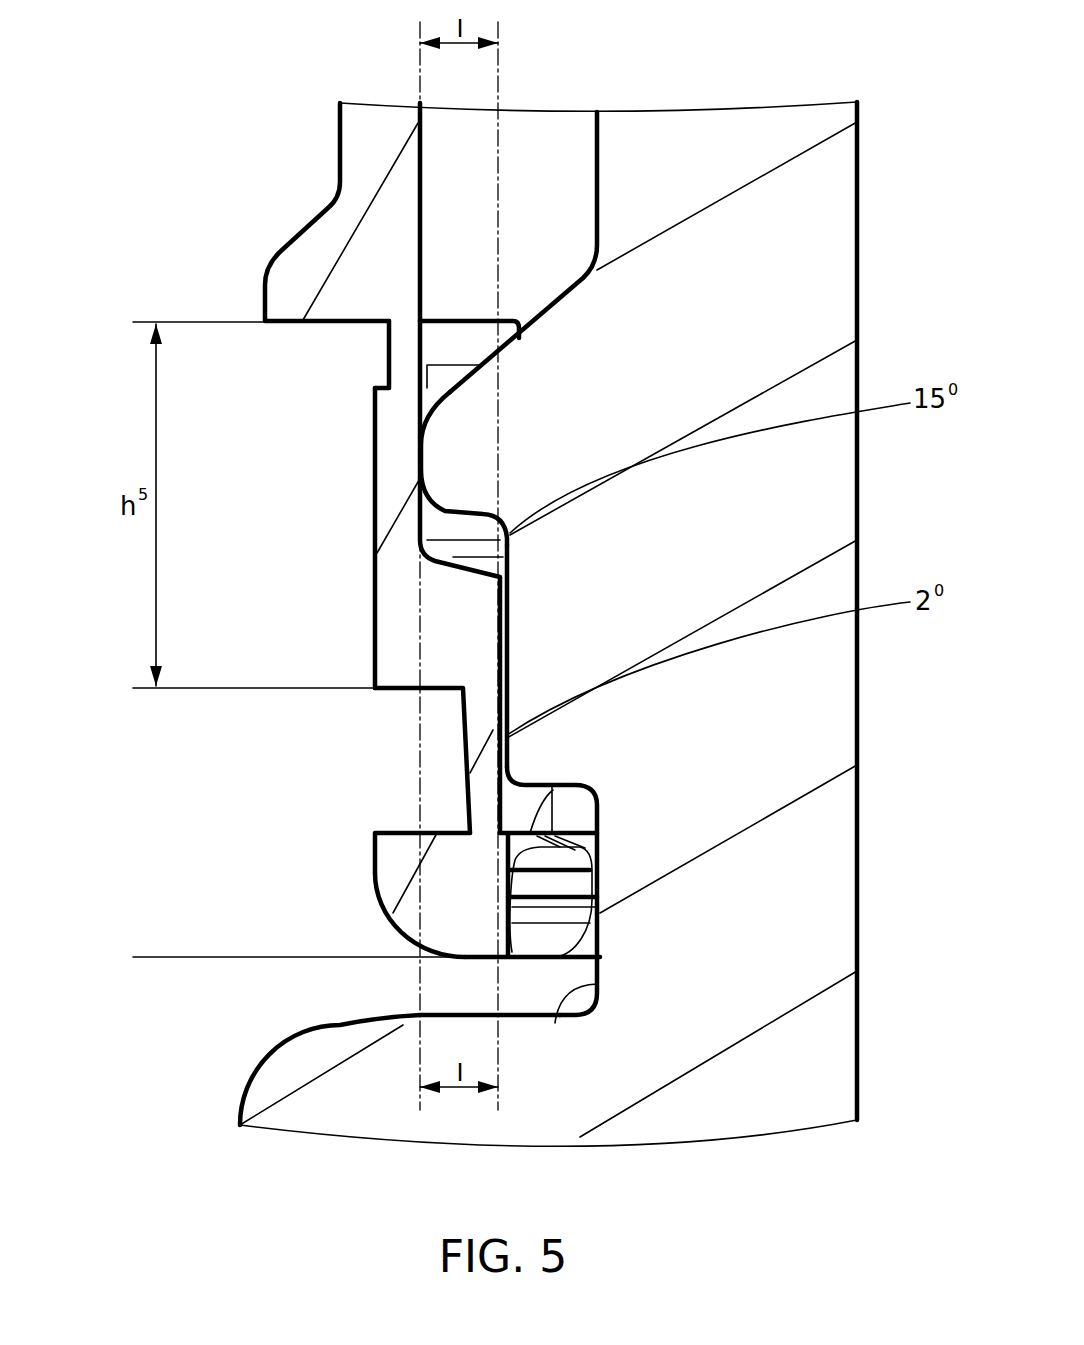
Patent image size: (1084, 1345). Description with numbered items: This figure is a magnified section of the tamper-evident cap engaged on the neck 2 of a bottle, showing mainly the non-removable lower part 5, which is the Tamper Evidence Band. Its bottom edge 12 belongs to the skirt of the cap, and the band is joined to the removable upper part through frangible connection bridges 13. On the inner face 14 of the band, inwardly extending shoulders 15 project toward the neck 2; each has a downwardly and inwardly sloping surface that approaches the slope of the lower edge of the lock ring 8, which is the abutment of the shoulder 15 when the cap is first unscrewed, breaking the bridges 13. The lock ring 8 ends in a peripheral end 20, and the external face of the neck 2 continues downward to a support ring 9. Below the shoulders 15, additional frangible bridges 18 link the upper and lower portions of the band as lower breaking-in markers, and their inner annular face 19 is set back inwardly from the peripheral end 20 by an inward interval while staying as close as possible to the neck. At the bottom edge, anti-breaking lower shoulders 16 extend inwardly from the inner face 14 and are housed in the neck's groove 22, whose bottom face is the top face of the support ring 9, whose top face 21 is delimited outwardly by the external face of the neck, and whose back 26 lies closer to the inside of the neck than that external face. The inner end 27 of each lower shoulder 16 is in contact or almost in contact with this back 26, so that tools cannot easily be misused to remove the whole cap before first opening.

The neck 2 is at (868, 685).
The lower part 5 is at (117, 322).
The lock ring 8 is at (467, 460).
The support ring 9 is at (387, 1092).
The bottom edge 12 is at (283, 277).
The frangible connection bridges 13 is at (403, 355).
The inner face 14 is at (450, 523).
The shoulders 15 is at (465, 585).
The lower shoulders 16 is at (560, 913).
The additional frangible bridges 18 is at (463, 766).
The inner annular face 19 is at (505, 830).
The peripheral end 20 is at (421, 463).
The top face 21 is at (600, 810).
The groove 22 is at (600, 870).
The back 26 is at (555, 1023).
The inner end 27 is at (508, 897).